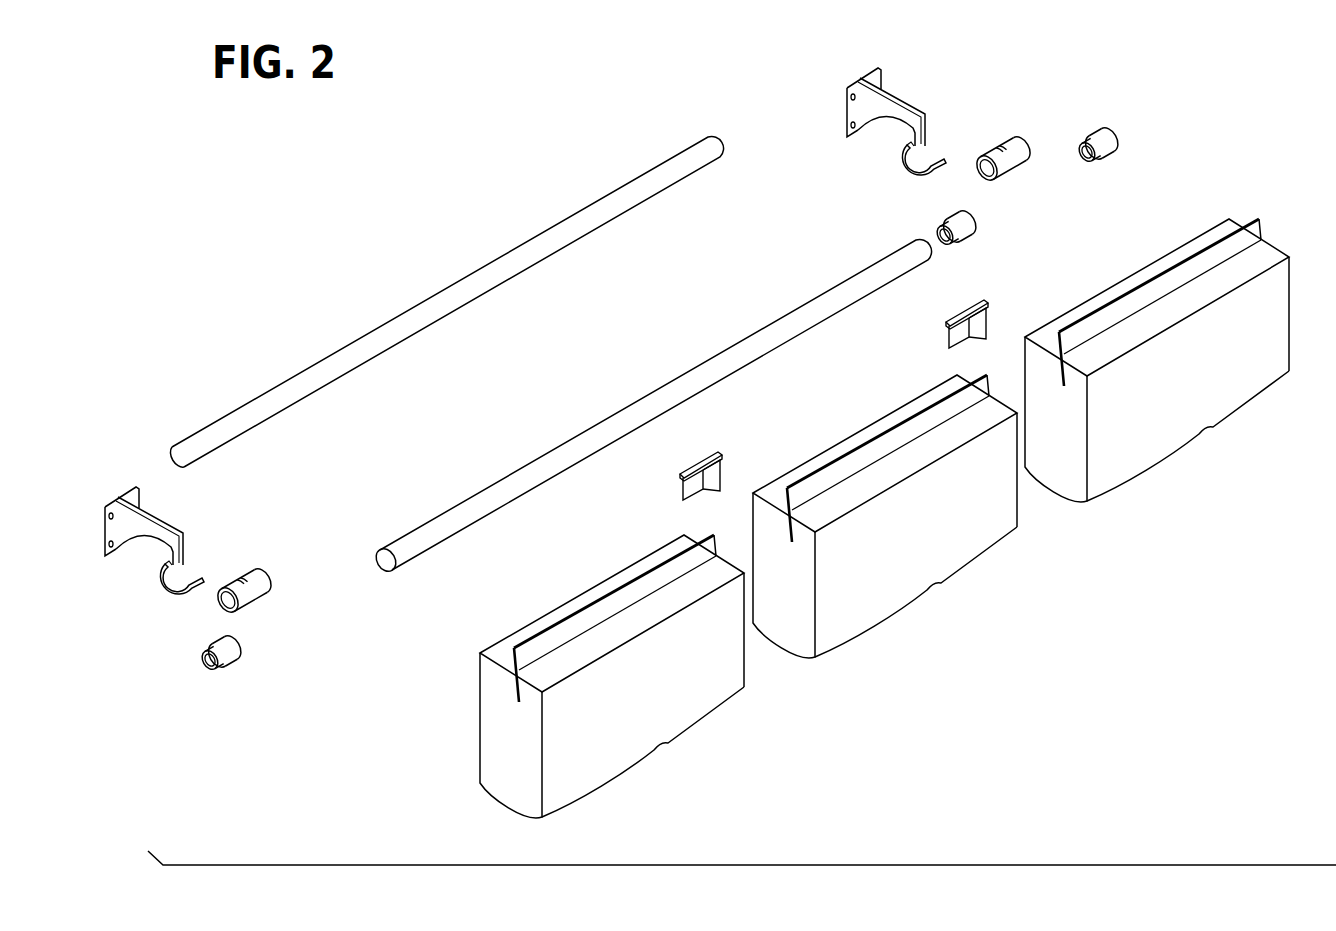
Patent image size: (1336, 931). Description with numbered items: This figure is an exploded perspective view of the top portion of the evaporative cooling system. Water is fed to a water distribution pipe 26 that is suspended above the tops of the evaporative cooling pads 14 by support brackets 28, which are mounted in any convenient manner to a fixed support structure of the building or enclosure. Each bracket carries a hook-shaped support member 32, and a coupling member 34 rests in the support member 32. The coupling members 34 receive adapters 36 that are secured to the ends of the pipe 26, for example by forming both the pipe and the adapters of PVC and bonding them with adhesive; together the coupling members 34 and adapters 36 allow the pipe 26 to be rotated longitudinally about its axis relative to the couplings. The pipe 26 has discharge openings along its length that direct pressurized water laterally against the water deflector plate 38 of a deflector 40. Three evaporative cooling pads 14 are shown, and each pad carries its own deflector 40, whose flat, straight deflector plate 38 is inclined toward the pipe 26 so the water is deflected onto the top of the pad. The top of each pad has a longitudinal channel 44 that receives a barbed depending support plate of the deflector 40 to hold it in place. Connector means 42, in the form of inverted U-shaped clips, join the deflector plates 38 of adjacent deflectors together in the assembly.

The evaporative cooling pad 14 is at (658, 704).
The water distribution pipe 26 is at (687, 374).
The support bracket 28 is at (882, 105).
The support member 32 is at (923, 165).
The coupling member 34 is at (1009, 166).
The adapter 36 is at (1113, 137).
The water deflector plate 38 is at (1134, 303).
The deflector 40 is at (836, 470).
The connector means 42 is at (713, 453).
The longitudinal channel 44 is at (521, 697).